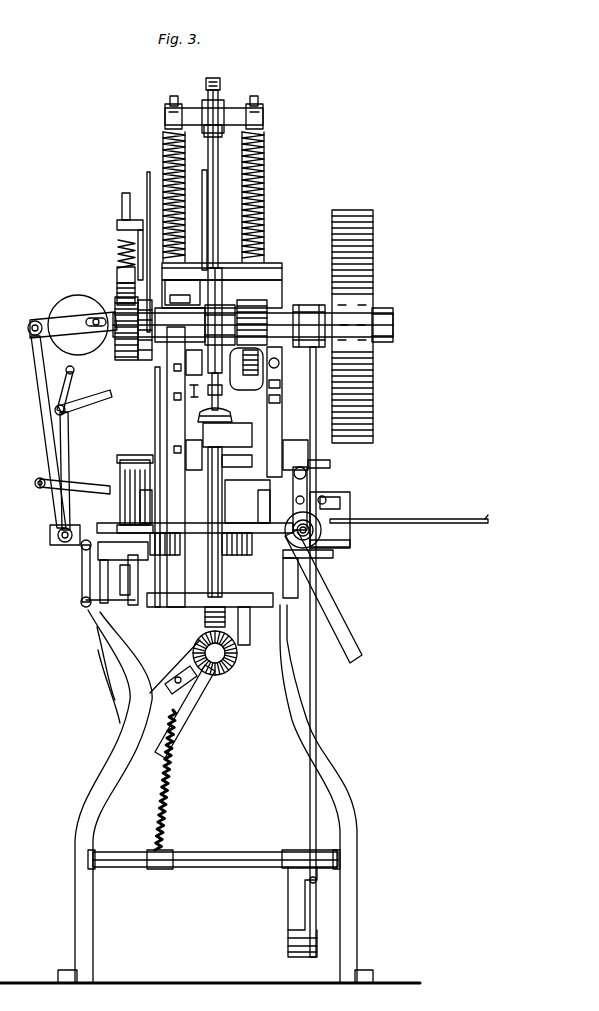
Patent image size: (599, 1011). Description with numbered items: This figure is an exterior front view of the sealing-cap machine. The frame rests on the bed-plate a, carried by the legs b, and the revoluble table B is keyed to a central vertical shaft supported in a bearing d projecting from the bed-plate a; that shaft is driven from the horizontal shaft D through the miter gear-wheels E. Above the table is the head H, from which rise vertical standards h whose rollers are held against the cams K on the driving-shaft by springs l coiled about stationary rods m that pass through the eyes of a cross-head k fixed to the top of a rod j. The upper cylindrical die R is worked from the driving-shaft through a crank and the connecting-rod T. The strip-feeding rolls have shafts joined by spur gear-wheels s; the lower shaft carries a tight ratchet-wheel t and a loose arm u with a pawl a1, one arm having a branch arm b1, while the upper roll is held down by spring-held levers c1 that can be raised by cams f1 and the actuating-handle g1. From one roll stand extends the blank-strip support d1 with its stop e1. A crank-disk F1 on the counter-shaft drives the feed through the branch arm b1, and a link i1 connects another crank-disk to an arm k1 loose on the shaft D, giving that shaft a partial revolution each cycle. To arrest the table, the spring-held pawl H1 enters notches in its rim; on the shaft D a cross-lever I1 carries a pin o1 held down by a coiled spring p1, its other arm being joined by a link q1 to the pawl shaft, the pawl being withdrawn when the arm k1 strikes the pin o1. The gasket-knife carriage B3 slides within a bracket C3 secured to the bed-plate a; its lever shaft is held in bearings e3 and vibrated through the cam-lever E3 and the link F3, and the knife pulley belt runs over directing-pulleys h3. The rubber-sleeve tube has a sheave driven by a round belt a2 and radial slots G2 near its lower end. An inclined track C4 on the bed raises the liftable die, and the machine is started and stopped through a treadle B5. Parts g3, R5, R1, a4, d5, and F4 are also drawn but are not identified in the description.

The stationary rods m is at (219, 103).
The cross-head k is at (263, 120).
The springs l is at (265, 152).
The rod j is at (219, 180).
The round belt a2 is at (147, 185).
The spur gear-wheels s is at (270, 270).
The legs b is at (330, 780).
The gear g3 is at (118, 378).
The cams K is at (300, 300).
The gear wheel R5 is at (375, 248).
The vertical standards h is at (276, 425).
The upper cylindrical die R is at (262, 440).
The frame member R1 is at (280, 452).
The connecting-rod T is at (200, 339).
The head H is at (225, 502).
The plate a4 is at (242, 464).
The revoluble table B is at (238, 522).
The loose arm u is at (110, 475).
The cross bar d5 is at (132, 625).
The bed-plate a is at (208, 632).
The cross-lever I1 is at (175, 666).
The horizontal shaft D is at (232, 668).
The miter gear-wheels E is at (240, 640).
The bearing d is at (230, 630).
The link q1 is at (245, 615).
The arm k1 is at (190, 735).
The pin o1 is at (170, 690).
The coiled spring p1 is at (170, 795).
The treadle B5 is at (210, 665).
The bracket C3 is at (90, 622).
The bearings e3 is at (98, 652).
The carriage B3 is at (78, 590).
The spring-held levers c1 is at (75, 560).
The branch arm b1 is at (58, 540).
The tight ratchet-wheel t is at (50, 525).
The crank-disk F1 is at (82, 300).
The radial slots G2 is at (55, 410).
The cam-lever E3 is at (50, 448).
The link i1 is at (70, 440).
The directing-pulleys h3 is at (104, 418).
The link F3 is at (38, 485).
The spring-held pawl H1 is at (330, 582).
The arm F4 is at (357, 636).
The inclined track C4 is at (335, 655).
The actuating-handle g1 is at (318, 475).
The cams f1 is at (345, 510).
The pawl a1 is at (345, 545).
The tin-plate blank-strip support d1 is at (409, 533).
The stop e1 is at (484, 515).